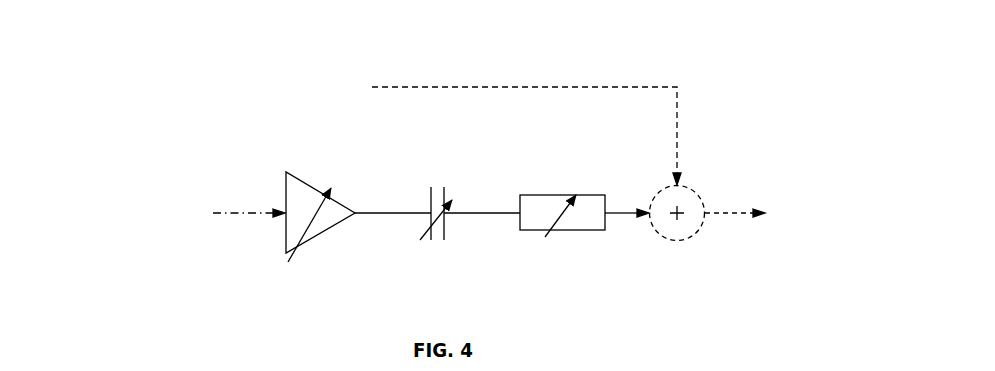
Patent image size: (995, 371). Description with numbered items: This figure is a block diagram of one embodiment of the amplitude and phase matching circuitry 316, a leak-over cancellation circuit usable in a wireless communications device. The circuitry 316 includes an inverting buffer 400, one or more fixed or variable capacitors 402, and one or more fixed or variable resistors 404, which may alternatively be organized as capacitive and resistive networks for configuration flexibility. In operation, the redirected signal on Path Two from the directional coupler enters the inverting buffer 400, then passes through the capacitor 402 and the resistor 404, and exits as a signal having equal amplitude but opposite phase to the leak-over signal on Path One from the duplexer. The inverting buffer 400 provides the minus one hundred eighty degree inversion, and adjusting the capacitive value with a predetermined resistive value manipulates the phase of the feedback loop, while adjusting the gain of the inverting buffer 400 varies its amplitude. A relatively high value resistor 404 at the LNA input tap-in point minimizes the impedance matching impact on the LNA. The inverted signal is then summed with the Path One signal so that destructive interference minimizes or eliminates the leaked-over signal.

The amplitude and phase matching circuitry 316 is at (222, 107).
The inverting buffer 400 is at (353, 203).
The capacitor 402 is at (445, 183).
The resistor 404 is at (602, 193).